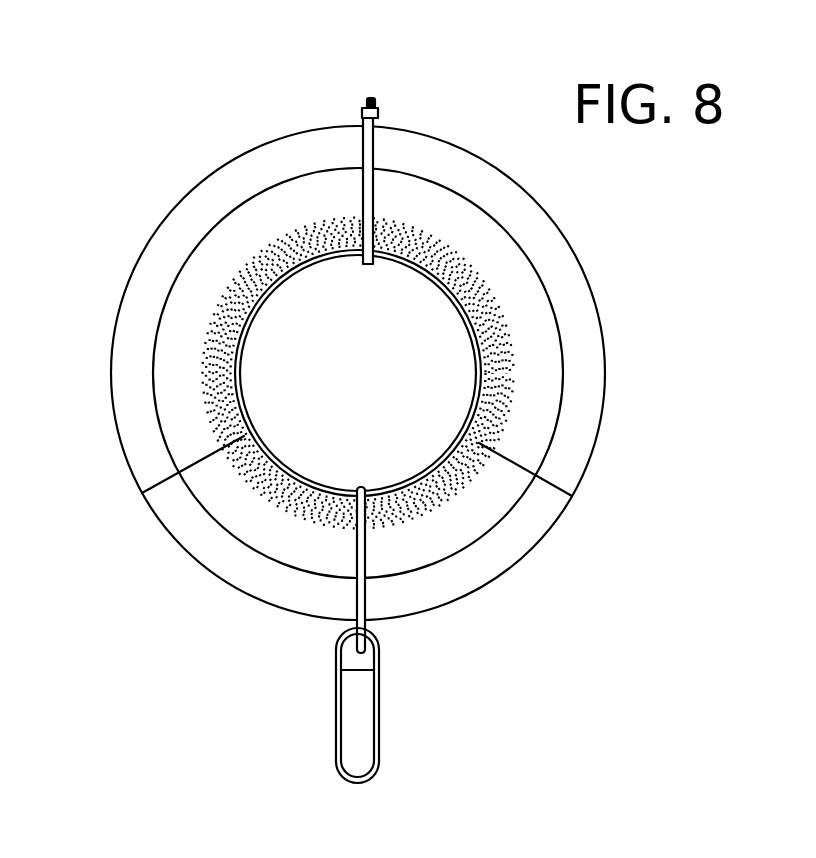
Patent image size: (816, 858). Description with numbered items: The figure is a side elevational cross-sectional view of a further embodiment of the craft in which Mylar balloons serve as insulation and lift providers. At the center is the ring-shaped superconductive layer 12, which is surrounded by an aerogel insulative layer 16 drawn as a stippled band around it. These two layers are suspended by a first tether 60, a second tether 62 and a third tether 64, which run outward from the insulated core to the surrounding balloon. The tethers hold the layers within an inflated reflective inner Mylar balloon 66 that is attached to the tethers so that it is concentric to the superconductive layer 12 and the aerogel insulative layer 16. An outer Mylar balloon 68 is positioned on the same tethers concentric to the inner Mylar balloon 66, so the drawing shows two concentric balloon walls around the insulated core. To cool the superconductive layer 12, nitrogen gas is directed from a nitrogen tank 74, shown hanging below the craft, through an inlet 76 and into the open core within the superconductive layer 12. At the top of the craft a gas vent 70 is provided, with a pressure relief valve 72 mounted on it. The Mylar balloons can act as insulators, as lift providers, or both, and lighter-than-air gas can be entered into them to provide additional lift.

The superconductive layer 12 is at (445, 238).
The aerogel insulative layer 16 is at (495, 292).
The first tether 60 is at (362, 140).
The second tether 62 is at (195, 462).
The third tether 64 is at (517, 455).
The inner Mylar balloon 66 is at (560, 330).
The outer Mylar balloon 68 is at (608, 405).
The gas vent 70 is at (381, 128).
The pressure relief valve 72 is at (372, 104).
The nitrogen tank 74 is at (378, 707).
The inlet 76 is at (367, 563).